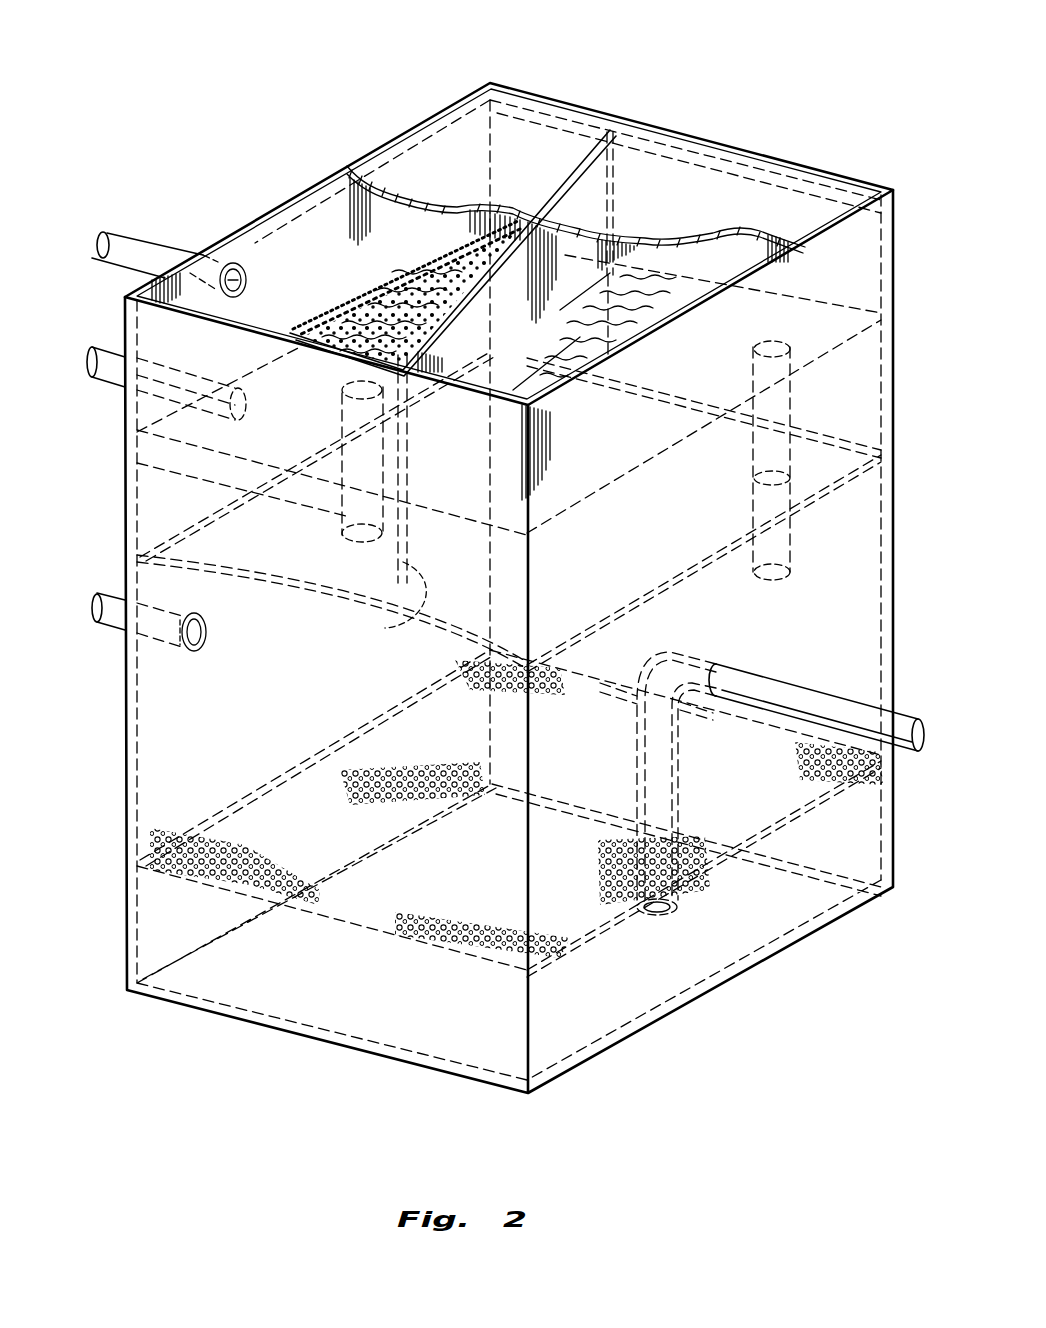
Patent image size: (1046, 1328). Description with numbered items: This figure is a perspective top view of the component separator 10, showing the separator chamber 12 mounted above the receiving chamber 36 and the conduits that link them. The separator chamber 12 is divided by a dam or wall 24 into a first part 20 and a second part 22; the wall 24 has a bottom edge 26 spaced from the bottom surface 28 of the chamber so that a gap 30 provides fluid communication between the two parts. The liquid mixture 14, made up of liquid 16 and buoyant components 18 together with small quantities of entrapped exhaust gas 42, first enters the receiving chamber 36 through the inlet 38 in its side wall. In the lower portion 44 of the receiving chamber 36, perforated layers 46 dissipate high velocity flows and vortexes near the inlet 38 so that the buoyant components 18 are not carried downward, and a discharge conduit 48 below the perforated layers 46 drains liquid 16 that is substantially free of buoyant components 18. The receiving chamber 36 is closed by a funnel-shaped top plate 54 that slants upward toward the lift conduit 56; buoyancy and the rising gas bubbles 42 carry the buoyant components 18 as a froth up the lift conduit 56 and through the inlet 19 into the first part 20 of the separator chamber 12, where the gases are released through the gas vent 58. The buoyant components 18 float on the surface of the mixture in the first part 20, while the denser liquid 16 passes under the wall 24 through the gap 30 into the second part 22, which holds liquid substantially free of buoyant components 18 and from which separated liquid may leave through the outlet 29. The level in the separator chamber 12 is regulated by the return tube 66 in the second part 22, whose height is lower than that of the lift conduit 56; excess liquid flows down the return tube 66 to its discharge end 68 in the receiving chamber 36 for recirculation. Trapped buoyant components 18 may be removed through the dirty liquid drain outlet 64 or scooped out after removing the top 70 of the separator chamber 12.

The component separator 10 is at (712, 97).
The separator chamber 12 is at (296, 198).
The liquid mixture 14 is at (363, 317).
The liquid 16 is at (667, 290).
The buoyant components 18 is at (393, 267).
The inlet 19 is at (252, 232).
The first part 20 is at (330, 200).
The second part 22 is at (727, 253).
The wall 24 is at (540, 293).
The bottom edge 26 is at (390, 626).
The bottom surface 28 is at (470, 610).
The outlet 29 is at (792, 345).
The gap 30 is at (398, 592).
The receiving chamber 36 is at (170, 692).
The inlet 38 is at (115, 597).
The exhaust gas 42 is at (66, 242).
The lower portion 44 is at (165, 900).
The perforated layers 46 is at (183, 832).
The discharge conduit 48 is at (680, 892).
The top plate 54 is at (233, 542).
The lift conduit 56 is at (137, 465).
The gas vent 58 is at (167, 247).
The dirty liquid drain outlet 64 is at (66, 362).
The return tube 66 is at (792, 414).
The discharge end 68 is at (800, 568).
The top 70 is at (797, 190).